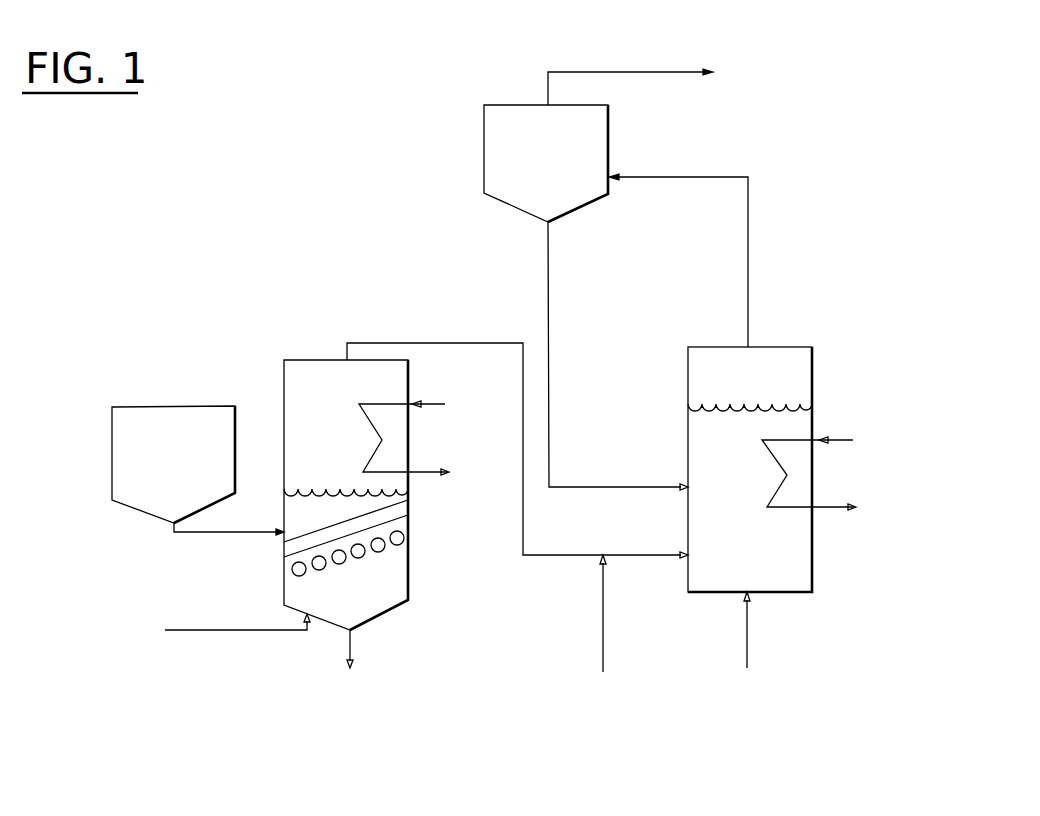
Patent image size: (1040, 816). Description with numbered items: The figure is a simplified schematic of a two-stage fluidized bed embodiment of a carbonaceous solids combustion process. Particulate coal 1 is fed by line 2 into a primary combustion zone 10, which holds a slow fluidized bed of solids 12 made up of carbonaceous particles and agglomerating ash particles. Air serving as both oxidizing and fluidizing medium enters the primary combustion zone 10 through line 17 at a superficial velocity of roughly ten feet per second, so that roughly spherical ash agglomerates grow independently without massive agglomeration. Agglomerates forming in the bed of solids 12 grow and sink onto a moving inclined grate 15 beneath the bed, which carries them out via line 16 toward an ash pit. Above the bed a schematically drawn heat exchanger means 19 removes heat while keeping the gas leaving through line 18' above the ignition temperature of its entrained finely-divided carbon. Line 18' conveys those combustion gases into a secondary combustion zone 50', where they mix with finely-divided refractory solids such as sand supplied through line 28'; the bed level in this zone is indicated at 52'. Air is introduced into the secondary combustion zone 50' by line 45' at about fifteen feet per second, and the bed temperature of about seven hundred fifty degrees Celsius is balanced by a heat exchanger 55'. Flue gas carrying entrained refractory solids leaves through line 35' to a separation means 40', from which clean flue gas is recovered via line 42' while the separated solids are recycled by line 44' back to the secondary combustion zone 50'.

The particulate coal 1 is at (122, 441).
The line 2 is at (219, 535).
The primary combustion zone 10 is at (284, 371).
The slow fluidized bed of solids 12 is at (328, 488).
The moving inclined grate 15 is at (413, 536).
The line 16 is at (354, 642).
The line 17 is at (272, 631).
The heat exchanger means 19 is at (397, 403).
The line 18' is at (517, 438).
The separation means 40' is at (570, 163).
The line 42' is at (690, 82).
The line 35' is at (704, 260).
The line 44' is at (618, 356).
The secondary combustion zone 50' is at (773, 469).
The regenerator bed level 52' is at (729, 427).
The heat exchanger 55' is at (887, 489).
The line 28' is at (614, 641).
The line 45' is at (764, 645).